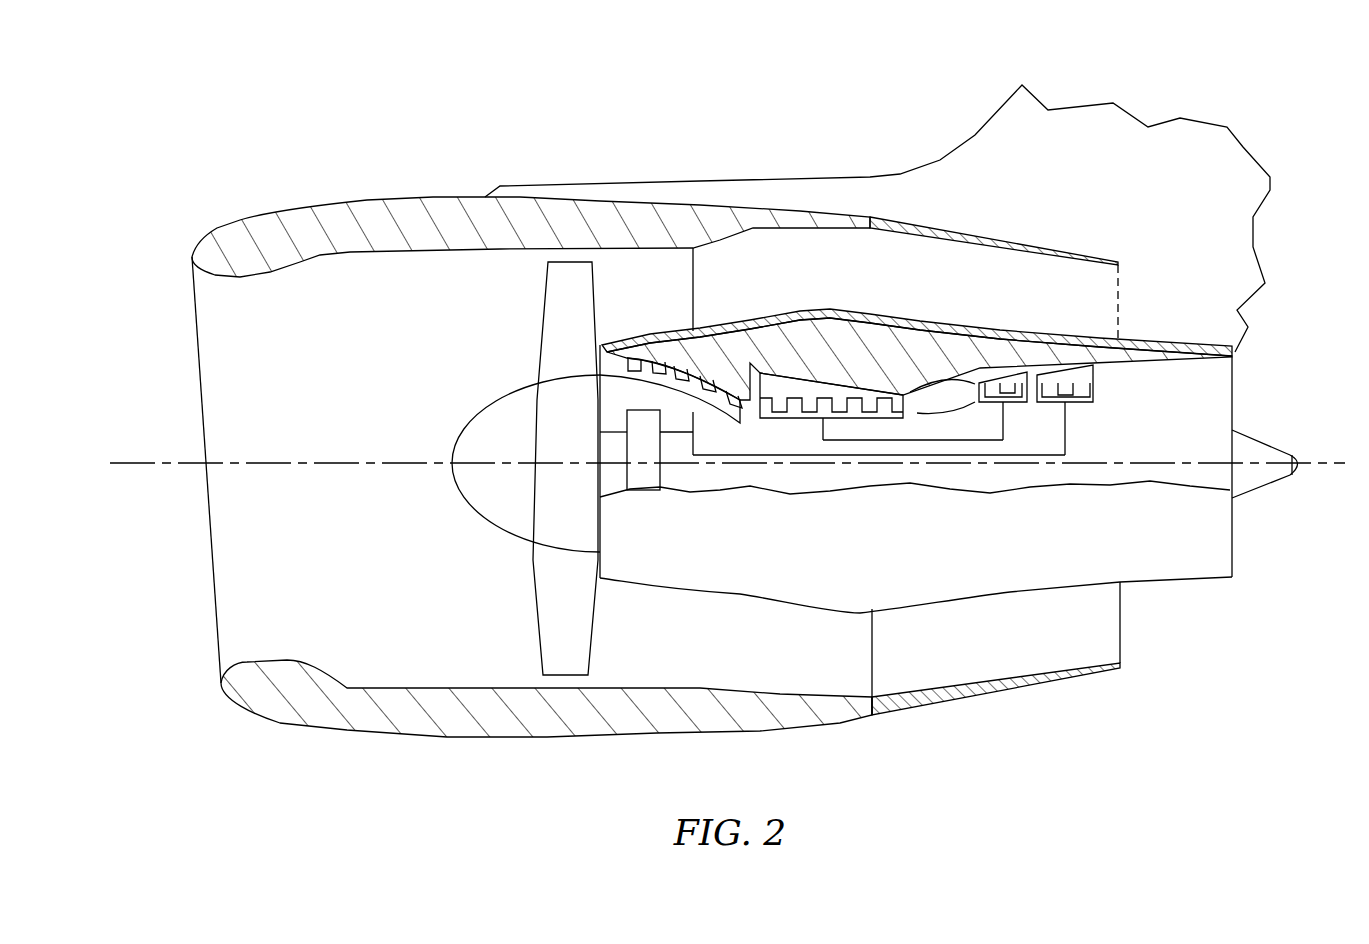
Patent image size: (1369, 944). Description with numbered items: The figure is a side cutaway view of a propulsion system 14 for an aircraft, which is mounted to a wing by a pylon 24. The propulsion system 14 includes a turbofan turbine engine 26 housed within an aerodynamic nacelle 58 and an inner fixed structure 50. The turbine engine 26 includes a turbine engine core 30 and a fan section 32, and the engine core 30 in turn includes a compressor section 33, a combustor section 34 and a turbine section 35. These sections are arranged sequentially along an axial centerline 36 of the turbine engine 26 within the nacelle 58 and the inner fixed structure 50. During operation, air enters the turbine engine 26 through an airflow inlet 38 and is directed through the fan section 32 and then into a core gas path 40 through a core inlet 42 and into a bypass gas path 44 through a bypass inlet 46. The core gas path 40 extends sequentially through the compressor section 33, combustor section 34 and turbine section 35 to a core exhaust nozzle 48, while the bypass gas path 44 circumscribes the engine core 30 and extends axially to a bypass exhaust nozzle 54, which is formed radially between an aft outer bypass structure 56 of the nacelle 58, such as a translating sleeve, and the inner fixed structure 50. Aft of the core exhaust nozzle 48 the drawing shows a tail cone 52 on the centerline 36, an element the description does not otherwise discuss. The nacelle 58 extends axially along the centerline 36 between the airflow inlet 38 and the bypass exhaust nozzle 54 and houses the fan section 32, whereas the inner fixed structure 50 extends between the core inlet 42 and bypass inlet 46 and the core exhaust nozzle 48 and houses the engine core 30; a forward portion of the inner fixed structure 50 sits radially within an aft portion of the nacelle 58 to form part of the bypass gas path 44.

The propulsion system 14 is at (222, 176).
The pylon 24 is at (1246, 142).
The turbofan turbine engine 26 is at (476, 666).
The turbine engine core 30 is at (1232, 593).
The fan section 32 is at (492, 568).
The compressor section 33 is at (623, 515).
The combustor section 34 is at (972, 515).
The turbine section 35 is at (1093, 515).
The axial centerline 36 is at (1337, 468).
The airflow inlet 38 is at (192, 358).
The core gas path 40 is at (1120, 385).
The core inlet 42 is at (594, 363).
The bypass gas path 44 is at (803, 255).
The bypass inlet 46 is at (597, 303).
The core exhaust nozzle 48 is at (1240, 404).
The inner fixed structure 50 is at (803, 300).
The exhaust cone 52 is at (1257, 497).
The bypass exhaust nozzle 54 is at (1130, 286).
The aft outer bypass structure 56 is at (963, 232).
The nacelle 58 is at (462, 188).